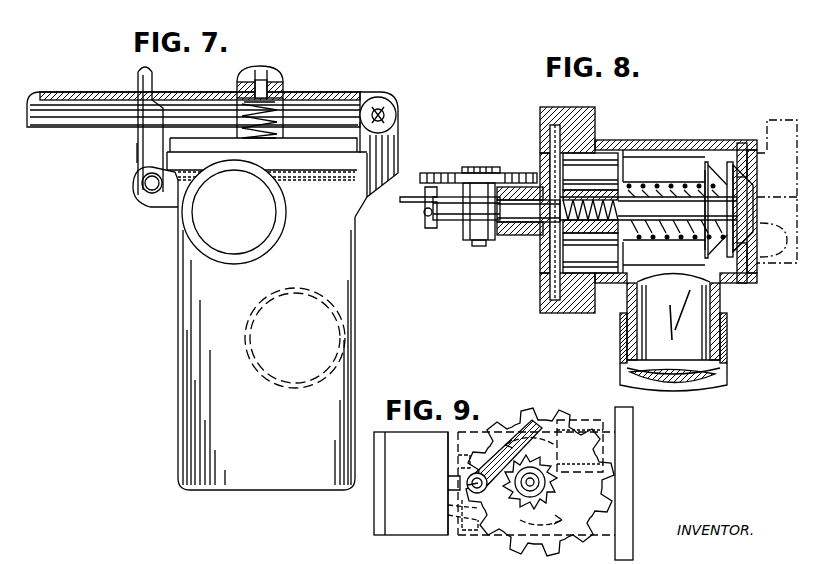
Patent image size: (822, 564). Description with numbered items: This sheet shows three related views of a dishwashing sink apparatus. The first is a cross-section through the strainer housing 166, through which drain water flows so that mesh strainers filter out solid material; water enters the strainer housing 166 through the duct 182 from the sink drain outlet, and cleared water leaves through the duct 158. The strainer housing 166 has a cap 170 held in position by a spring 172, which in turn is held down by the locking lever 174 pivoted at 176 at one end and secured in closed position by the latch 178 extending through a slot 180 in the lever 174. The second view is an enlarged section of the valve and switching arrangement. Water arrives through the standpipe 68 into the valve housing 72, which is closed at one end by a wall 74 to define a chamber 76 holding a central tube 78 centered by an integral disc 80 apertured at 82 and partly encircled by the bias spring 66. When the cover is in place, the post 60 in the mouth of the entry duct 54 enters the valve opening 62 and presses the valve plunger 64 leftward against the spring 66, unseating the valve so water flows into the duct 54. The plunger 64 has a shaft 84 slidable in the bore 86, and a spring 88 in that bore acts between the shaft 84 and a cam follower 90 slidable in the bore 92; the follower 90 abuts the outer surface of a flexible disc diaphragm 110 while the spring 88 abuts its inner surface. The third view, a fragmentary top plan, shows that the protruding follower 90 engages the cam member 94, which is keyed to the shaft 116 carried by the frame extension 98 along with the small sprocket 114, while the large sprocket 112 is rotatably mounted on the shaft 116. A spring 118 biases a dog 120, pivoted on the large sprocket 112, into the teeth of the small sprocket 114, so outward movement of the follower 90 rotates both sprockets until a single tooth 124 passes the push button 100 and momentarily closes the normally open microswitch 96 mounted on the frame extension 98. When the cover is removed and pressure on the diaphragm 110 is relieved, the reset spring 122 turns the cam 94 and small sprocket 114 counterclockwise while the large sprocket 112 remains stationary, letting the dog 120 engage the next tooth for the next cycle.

In FIG. 8, the entry duct 54 is at (790, 265).
In FIG. 8, the central projection or post 60 is at (777, 221).
In FIG. 8, the valve opening 62 is at (748, 185).
In FIG. 8, the valve plunger 64 is at (730, 160).
In FIG. 8, the spring 66 is at (690, 283).
In FIG. 8, the liquid supply pipe or standpipe 68 is at (727, 347).
In FIG. 8, the valve housing 72 is at (612, 140).
In FIG. 8, the wall 74 is at (548, 160).
In FIG. 8, the chamber 76 is at (700, 150).
In FIG. 8, the central tube 78 is at (590, 176).
In FIG. 8, the integral disc 80 is at (627, 165).
In FIG. 8, the apertures 82 is at (627, 182).
In FIG. 8, the shaft 84 is at (648, 208).
In FIG. 8, the bore 86 is at (668, 190).
In FIG. 8, the spring 88 is at (590, 246).
In FIG. 8, the cam follower 90 is at (528, 211).
In FIG. 9, the cam follower 90 is at (633, 442).
In FIG. 8, the bore 92 is at (525, 235).
In FIG. 8, the cam member 94 is at (470, 230).
In FIG. 9, the cam member 94 is at (548, 440).
In FIG. 9, the microswitch 96 is at (400, 535).
In FIG. 8, the frame extension 98 is at (413, 220).
In FIG. 9, the frame extension 98 is at (374, 530).
In FIG. 9, the push button 100 is at (448, 484).
In FIG. 8, the flexible disc diaphragm 110 is at (550, 168).
In FIG. 8, the large sprocket 112 is at (420, 178).
In FIG. 9, the large sprocket 112 is at (525, 410).
In FIG. 8, the small sprocket 114 is at (480, 158).
In FIG. 9, the small sprocket 114 is at (555, 495).
In FIG. 8, the shaft 116 is at (478, 246).
In FIG. 9, the spring 118 is at (510, 440).
In FIG. 9, the dog 120 is at (478, 505).
In FIG. 8, the reset spring 122 is at (440, 222).
In FIG. 9, the reset spring 122 is at (450, 510).
In FIG. 9, the tooth 124 is at (456, 462).
In FIG. 7, the duct 158 is at (345, 332).
In FIG. 7, the strainer housing 166 is at (182, 347).
In FIG. 7, the cap 170 is at (300, 138).
In FIG. 7, the spring 172 is at (270, 137).
In FIG. 7, the locking lever 174 is at (196, 96).
In FIG. 7, the pivot 176 is at (385, 108).
In FIG. 7, the latch 178 is at (151, 77).
In FIG. 7, the slot 180 is at (138, 95).
In FIG. 7, the duct 182 is at (210, 255).